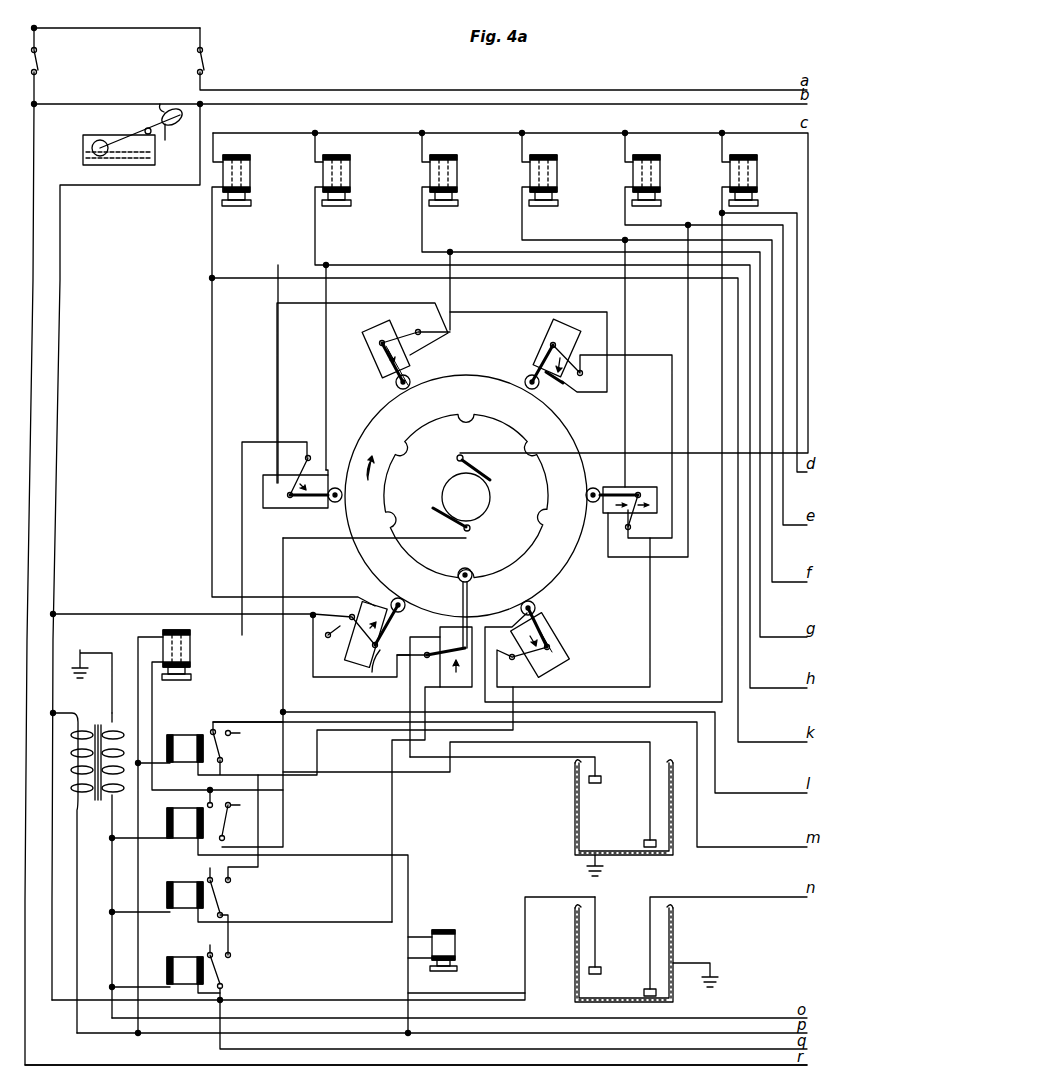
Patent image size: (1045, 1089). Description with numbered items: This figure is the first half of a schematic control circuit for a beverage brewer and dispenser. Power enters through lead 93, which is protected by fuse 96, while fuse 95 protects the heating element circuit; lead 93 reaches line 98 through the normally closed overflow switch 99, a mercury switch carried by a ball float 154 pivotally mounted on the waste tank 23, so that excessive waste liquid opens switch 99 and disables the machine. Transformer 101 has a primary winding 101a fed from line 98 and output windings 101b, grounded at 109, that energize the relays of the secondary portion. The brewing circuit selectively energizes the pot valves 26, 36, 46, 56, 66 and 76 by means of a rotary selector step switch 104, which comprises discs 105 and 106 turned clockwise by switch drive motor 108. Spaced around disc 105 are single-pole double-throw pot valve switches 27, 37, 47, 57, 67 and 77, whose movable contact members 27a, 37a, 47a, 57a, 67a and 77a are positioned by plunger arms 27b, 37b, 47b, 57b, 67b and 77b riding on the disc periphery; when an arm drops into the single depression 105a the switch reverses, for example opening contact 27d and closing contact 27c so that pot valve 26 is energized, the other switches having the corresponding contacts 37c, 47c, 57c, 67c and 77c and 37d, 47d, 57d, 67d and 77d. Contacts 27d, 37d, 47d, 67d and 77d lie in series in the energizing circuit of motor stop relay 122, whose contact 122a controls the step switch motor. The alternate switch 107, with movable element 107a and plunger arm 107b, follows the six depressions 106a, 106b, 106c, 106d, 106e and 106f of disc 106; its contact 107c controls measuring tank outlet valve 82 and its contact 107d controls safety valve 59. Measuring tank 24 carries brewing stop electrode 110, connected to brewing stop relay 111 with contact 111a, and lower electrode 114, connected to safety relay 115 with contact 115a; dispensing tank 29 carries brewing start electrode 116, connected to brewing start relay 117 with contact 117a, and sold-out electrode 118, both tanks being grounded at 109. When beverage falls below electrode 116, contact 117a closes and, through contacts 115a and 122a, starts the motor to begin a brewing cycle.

The lead 93 is at (34, 28).
The fuse 96 is at (38, 60).
The fuse 95 is at (204, 60).
The ball float 154 is at (105, 140).
The waste tank 23 is at (83, 150).
The overflow switch 99 is at (170, 128).
The line 98 is at (60, 278).
The pot valve 26 is at (250, 170).
The pot valve 36 is at (350, 170).
The pot valve 46 is at (457, 170).
The pot valve 56 is at (557, 170).
The pot valve 66 is at (660, 170).
The pot valve 76 is at (757, 172).
The pot valve switch 47 is at (372, 338).
The movable contact member 47a is at (415, 329).
The plunger arm 47b is at (394, 380).
The lever 47c is at (412, 352).
The contact 47d is at (386, 322).
The pot valve switch 57 is at (556, 334).
The movable contact member 57a is at (584, 515).
The plunger arm 57b is at (538, 372).
The lever 57c is at (556, 386).
The switch housing 57d is at (590, 344).
The rotary selector step switch 104 is at (472, 372).
The disc 105 is at (562, 418).
The depression 105a is at (472, 584).
The disc 106 is at (552, 572).
The depression 106a is at (480, 560).
The depression 106b is at (546, 512).
The depression 106c is at (540, 452).
The depression 106d is at (466, 422).
The depression 106e is at (402, 450).
The depression 106f is at (392, 520).
The switch drive motor 108 is at (487, 505).
The pot valve switch 37 is at (272, 508).
The movable contact member 37a is at (295, 470).
The plunger arm 37b is at (316, 508).
The lever 37c is at (336, 470).
The contact 37d is at (270, 480).
The pot valve switch 67 is at (644, 486).
The movable contact member 67a is at (626, 530).
The plunger arm 67b is at (606, 486).
The lever 67c is at (606, 528).
The contact 67d is at (656, 510).
The pot valve switch 27 is at (368, 674).
The movable contact member 27a is at (352, 612).
The plunger arm 27b is at (388, 600).
The contact 27c is at (386, 676).
The contact 27d is at (340, 640).
The pot valve switch 77 is at (568, 652).
The movable contact member 77a is at (512, 660).
The plunger arm 77b is at (538, 612).
The lever 77c is at (526, 636).
The contact 77d is at (560, 676).
The alternate switch 107 is at (455, 695).
The movable element 107a is at (427, 651).
The plunger arm 107b is at (472, 615).
The contact 107c is at (458, 612).
The contact 107d is at (460, 692).
The ground 109 is at (82, 650).
The transformer 101 is at (94, 808).
The primary winding 101a is at (78, 792).
The output winding 101b is at (106, 720).
The safety valve 59 is at (190, 654).
The motor stop relay 122 is at (188, 734).
The contact 122a is at (222, 744).
The brewing stop relay 111 is at (186, 838).
The contact 111a is at (224, 820).
The safety relay 115 is at (186, 918).
The contact 115a is at (232, 900).
The brewing start relay 117 is at (165, 979).
The contact 117a is at (232, 972).
The measuring tank 24 is at (575, 800).
The brewing stop electrode 110 is at (601, 780).
The lower electrode 114 is at (644, 843).
The dispensing tank 29 is at (575, 954).
The brewing start electrode 116 is at (601, 968).
The sold-out electrode 118 is at (644, 992).
The measuring tank outlet valve 82 is at (456, 946).